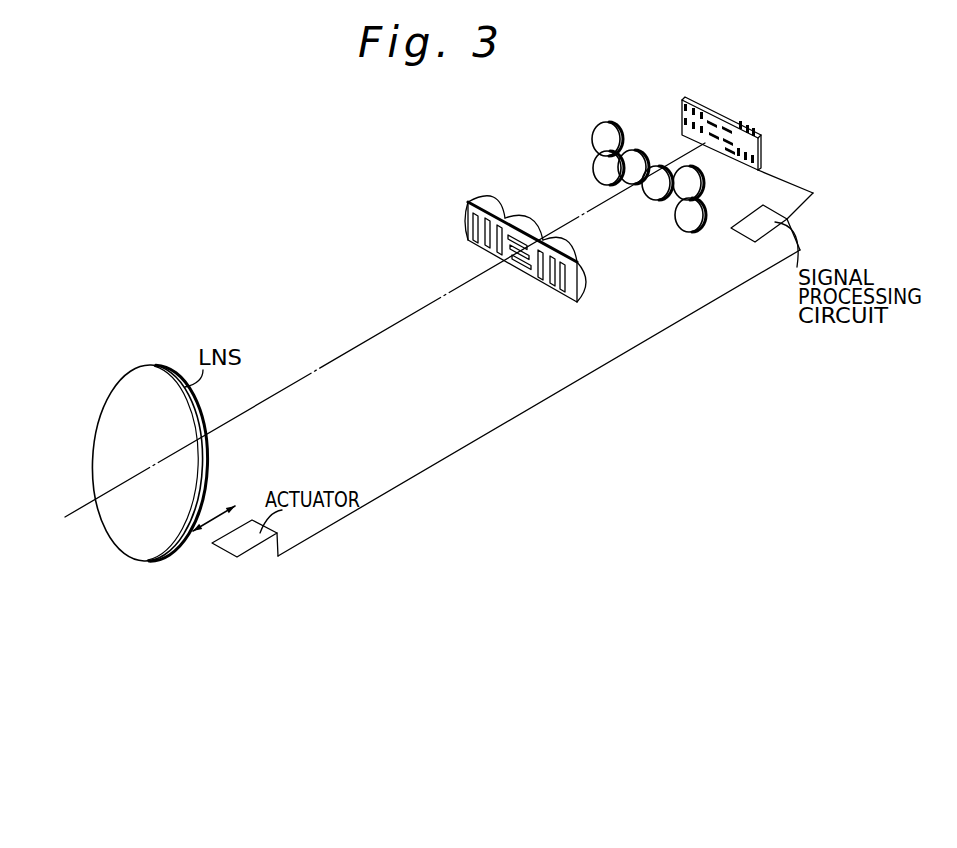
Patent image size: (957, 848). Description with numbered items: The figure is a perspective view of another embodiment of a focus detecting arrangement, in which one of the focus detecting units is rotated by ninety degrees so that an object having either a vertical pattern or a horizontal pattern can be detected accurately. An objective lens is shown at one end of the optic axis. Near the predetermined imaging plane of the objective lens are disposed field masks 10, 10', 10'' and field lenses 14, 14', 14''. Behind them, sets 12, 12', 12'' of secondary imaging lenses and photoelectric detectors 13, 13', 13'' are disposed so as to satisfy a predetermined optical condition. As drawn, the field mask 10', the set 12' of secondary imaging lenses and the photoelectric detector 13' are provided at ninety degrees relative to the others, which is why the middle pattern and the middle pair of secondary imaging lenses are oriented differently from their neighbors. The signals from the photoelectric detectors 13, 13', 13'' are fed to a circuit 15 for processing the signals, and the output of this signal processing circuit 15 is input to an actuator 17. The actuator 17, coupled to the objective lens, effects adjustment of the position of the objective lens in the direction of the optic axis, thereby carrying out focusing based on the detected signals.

The field mask 10 is at (462, 234).
The field mask 10' is at (495, 276).
The field mask 10'' is at (547, 297).
The set of secondary imaging lenses 12 is at (600, 136).
The set of secondary imaging lenses 12' is at (645, 156).
The set of secondary imaging lenses 12'' is at (706, 199).
The photoelectric detector 13 is at (720, 112).
The photoelectric detector 13' is at (727, 114).
The photoelectric detector 13'' is at (768, 132).
The field lens 14 is at (519, 225).
The field lens 14' is at (529, 214).
The field lens 14'' is at (580, 265).
The circuit for processing the signals 15 is at (745, 233).
The actuator 17 is at (237, 543).